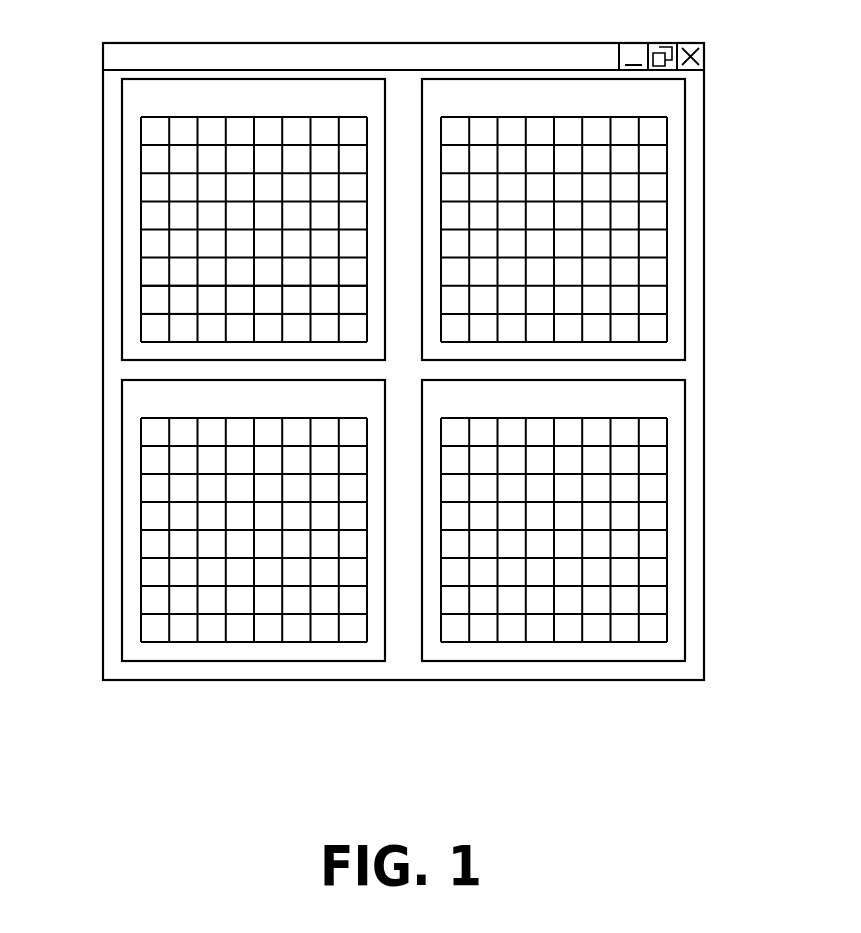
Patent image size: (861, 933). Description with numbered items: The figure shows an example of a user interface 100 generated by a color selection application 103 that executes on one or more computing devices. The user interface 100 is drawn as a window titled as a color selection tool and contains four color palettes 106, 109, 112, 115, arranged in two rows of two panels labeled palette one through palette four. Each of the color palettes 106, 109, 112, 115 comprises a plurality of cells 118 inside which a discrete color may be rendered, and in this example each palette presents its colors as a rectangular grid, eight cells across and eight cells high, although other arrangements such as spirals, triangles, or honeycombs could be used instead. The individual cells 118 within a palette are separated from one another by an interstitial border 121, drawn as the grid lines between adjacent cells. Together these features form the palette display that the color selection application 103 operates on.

The user interface 100 is at (403, 660).
The color selection application 103 is at (120, 735).
The color palette 106 is at (140, 102).
The color palette 109 is at (665, 102).
The color palette 112 is at (665, 398).
The color palette 115 is at (140, 407).
The cells 118 is at (158, 192).
The interstitial border 121 is at (140, 288).